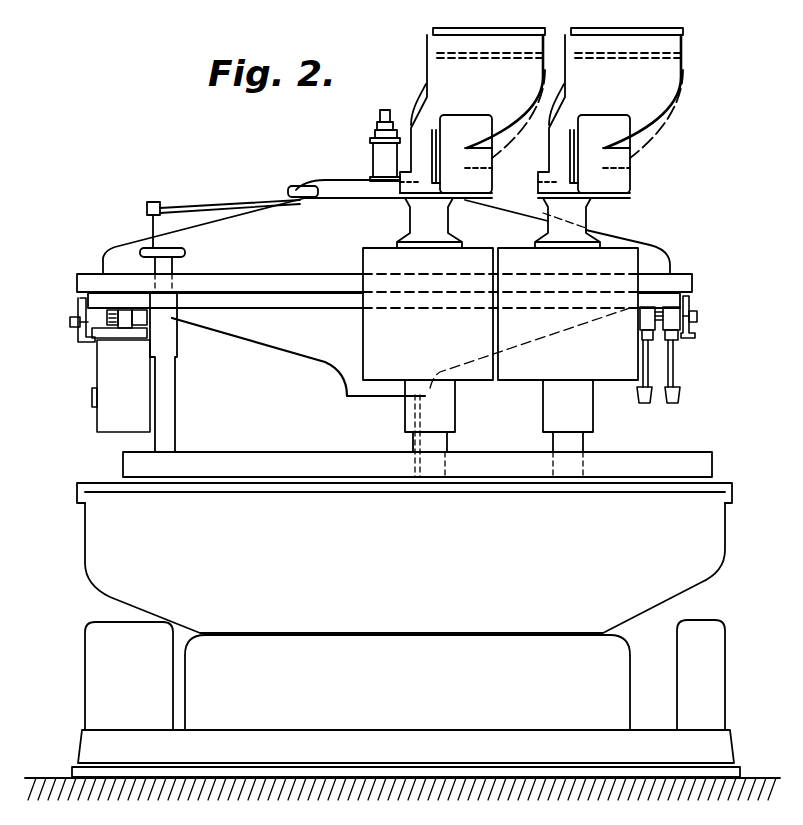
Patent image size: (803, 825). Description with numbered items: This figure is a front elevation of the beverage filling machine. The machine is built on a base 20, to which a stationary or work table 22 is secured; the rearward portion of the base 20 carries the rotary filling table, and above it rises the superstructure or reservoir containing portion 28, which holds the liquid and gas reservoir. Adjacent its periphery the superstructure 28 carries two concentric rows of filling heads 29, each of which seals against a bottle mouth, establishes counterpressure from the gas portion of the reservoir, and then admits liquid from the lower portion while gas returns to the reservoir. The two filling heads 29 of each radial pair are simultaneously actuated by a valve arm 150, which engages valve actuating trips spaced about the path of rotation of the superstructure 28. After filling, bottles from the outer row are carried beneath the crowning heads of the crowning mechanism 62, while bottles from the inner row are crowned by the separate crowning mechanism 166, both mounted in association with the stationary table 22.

The base 20 is at (597, 662).
The stationary or work table 22 is at (115, 547).
The superstructure or reservoir containing portion 28 is at (103, 262).
The filling heads 29 is at (718, 338).
The crowning mechanism 62 is at (613, 367).
The valve arm 150 is at (708, 300).
The crowning mechanism 166 is at (377, 357).